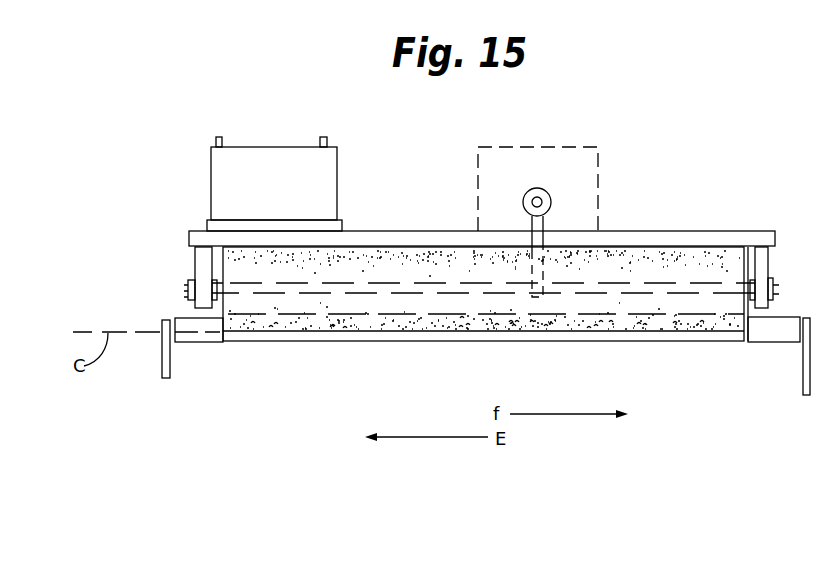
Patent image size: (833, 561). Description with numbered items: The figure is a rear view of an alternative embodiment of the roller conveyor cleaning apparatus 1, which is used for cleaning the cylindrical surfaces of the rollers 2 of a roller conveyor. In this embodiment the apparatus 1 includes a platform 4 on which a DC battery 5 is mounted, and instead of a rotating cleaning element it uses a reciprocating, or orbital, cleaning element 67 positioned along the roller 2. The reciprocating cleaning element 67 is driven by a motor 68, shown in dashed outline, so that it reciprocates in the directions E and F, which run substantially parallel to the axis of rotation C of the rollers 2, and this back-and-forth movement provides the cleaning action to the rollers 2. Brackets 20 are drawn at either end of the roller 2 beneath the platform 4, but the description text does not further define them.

The roller conveyor cleaning apparatus 1 is at (379, 128).
The rollers 2 is at (588, 343).
The platform 4 is at (418, 231).
The DC battery 5 is at (286, 147).
The bearing bracket 20 is at (195, 262).
The reciprocating cleaning element 67 is at (513, 343).
The motor 68 is at (598, 147).